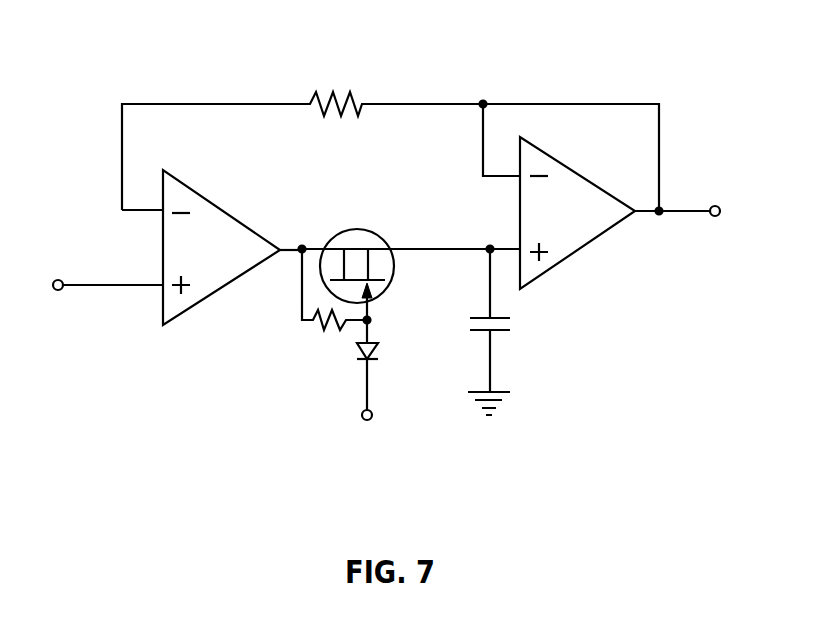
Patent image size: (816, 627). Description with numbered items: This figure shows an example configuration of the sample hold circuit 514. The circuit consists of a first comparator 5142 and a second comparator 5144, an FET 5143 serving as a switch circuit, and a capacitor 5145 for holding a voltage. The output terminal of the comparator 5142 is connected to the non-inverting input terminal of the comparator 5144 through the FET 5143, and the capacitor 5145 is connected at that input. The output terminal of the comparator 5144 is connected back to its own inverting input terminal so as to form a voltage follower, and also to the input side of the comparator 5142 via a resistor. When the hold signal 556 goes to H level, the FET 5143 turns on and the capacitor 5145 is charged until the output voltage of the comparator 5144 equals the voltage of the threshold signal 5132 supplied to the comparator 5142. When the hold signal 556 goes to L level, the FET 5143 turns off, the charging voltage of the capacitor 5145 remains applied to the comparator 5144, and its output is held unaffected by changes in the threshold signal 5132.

The sample hold circuit 514 is at (428, 86).
The threshold signal 5132 is at (112, 287).
The comparator 5142 is at (204, 299).
The FET 5143 is at (375, 229).
The comparator 5144 is at (582, 249).
The capacitor 5145 is at (504, 329).
The hold signal 556 is at (411, 395).